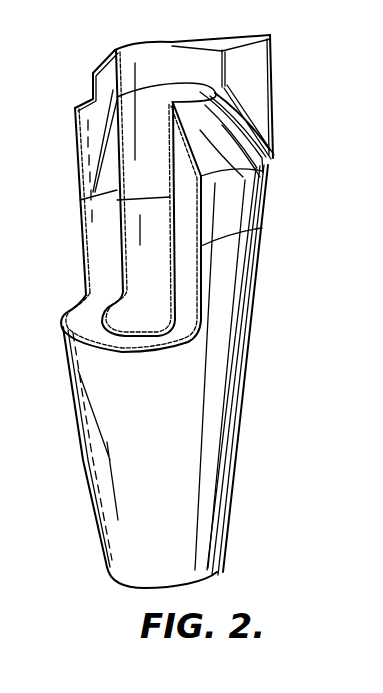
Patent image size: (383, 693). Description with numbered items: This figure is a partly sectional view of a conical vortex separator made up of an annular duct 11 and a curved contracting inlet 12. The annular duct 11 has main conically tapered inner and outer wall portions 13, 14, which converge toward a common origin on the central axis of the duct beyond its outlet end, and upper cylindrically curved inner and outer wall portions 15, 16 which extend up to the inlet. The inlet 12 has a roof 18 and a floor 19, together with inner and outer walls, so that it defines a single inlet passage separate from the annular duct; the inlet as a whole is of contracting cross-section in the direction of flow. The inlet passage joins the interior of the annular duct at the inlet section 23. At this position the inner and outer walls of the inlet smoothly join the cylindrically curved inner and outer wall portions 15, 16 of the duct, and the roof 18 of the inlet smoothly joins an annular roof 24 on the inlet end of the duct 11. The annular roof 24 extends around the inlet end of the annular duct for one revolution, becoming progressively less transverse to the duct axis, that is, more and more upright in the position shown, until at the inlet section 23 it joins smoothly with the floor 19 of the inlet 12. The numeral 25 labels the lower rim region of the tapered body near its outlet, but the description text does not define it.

The annular duct 11 is at (88, 485).
The curved contracting inlet 12 is at (258, 35).
The conically tapered inner wall portion 13 is at (99, 333).
The conically tapered outer wall portion 14 is at (93, 397).
The cylindrically curved inner wall portion 15 is at (160, 92).
The cylindrically curved outer wall portion 16 is at (73, 132).
The roof 18 is at (217, 38).
The floor 19 is at (102, 170).
The inlet section 23 is at (90, 77).
The annular roof 24 is at (235, 158).
The bottom rim 25 is at (140, 590).